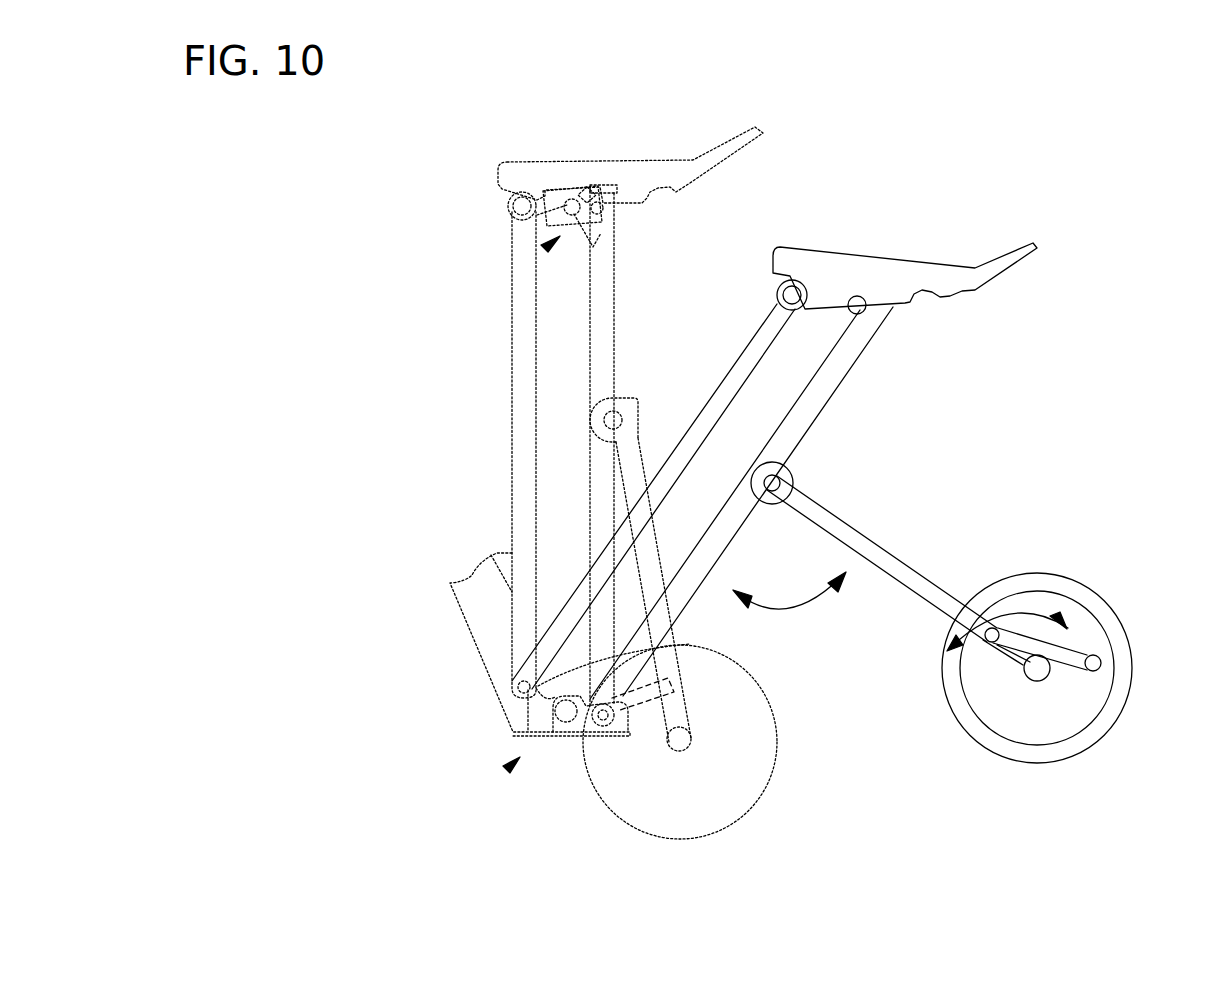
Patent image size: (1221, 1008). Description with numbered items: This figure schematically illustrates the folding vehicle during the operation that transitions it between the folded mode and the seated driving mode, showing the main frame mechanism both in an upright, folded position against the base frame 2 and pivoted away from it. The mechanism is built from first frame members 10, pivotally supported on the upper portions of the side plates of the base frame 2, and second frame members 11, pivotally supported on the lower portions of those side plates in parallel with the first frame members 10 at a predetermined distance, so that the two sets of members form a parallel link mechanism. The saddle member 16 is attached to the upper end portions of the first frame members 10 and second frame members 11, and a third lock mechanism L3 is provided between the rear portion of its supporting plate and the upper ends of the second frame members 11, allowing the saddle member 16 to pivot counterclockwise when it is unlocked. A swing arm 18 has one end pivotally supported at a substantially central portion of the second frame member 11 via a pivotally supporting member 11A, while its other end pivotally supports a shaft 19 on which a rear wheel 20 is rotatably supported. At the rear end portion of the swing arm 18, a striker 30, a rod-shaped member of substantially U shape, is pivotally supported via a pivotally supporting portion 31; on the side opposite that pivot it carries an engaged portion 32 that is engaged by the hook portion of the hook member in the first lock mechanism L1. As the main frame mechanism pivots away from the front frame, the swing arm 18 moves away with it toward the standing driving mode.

The base frame 2 is at (484, 628).
The first frame member 10 is at (512, 340).
The second frame member 11 is at (613, 340).
The pivotally supporting member 11A is at (634, 400).
The saddle member 16 is at (618, 172).
The swing arm 18 is at (892, 545).
The shaft 19 is at (1030, 676).
The rear wheel 20 is at (760, 686).
The striker 30 is at (1085, 652).
The pivotally supporting portion 31 is at (988, 642).
The engaged portion 32 is at (1107, 665).
The first lock mechanism L1 is at (510, 772).
The third lock mechanism L3 is at (541, 246).